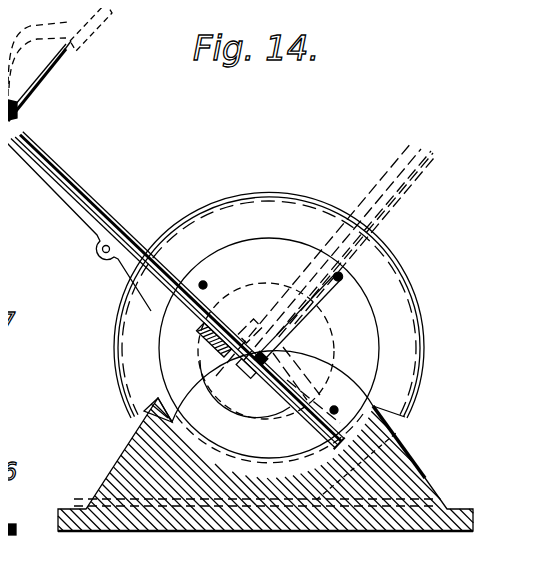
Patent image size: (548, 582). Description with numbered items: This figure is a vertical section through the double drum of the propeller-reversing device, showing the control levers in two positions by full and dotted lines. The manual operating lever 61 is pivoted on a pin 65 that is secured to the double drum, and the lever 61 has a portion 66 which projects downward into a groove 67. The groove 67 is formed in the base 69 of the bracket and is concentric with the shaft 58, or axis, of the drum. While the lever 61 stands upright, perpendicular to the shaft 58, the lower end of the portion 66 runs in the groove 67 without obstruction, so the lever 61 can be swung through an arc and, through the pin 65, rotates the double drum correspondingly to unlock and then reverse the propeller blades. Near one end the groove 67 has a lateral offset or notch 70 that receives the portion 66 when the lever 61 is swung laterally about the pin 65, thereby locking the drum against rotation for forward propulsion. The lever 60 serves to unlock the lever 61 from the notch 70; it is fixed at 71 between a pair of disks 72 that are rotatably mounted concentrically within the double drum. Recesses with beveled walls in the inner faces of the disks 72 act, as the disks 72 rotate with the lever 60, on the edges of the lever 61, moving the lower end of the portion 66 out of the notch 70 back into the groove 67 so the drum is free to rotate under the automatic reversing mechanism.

The shaft 58 is at (263, 340).
The lever 60 is at (78, 214).
The manual operating lever 61 is at (95, 202).
The pin 65 is at (333, 266).
The portion of the lever 66 is at (269, 348).
The groove 67 is at (355, 413).
The base 69 is at (325, 473).
The notch 70 is at (152, 408).
The fixing point of lever 71 is at (189, 324).
The disks 72 is at (312, 364).